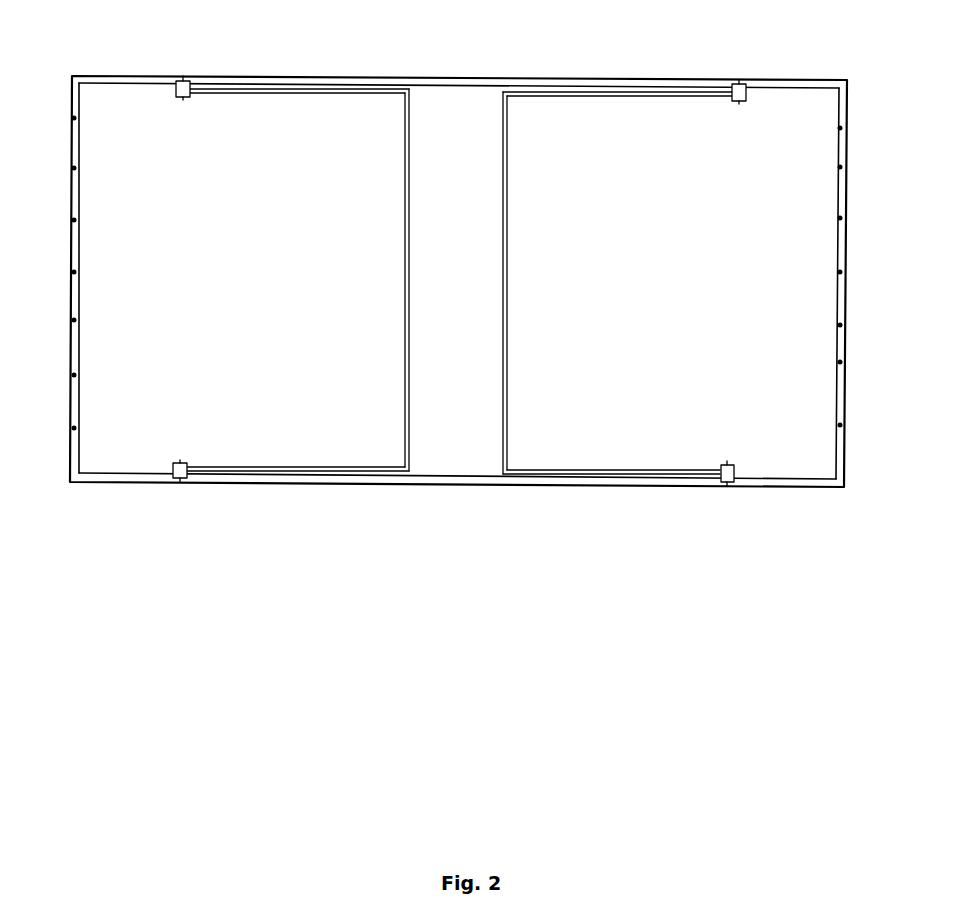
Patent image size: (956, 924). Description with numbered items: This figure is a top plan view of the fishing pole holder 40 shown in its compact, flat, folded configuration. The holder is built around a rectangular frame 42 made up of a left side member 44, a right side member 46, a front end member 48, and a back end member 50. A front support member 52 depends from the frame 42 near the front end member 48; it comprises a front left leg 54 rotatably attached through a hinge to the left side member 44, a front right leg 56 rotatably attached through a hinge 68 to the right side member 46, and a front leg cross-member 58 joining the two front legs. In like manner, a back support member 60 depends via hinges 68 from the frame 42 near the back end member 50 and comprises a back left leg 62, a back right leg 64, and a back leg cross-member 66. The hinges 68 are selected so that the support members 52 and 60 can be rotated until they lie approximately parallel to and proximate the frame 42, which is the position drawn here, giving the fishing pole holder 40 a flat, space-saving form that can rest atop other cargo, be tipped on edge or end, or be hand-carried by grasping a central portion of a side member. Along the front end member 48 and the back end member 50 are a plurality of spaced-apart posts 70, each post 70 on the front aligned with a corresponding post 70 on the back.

The fishing pole holder 40 is at (455, 339).
The rectangular frame 42 is at (68, 486).
The left side member 44 is at (438, 76).
The right side member 46 is at (455, 488).
The front end member 48 is at (836, 256).
The back end member 50 is at (80, 295).
The front support member 52 is at (617, 283).
The front left leg 54 is at (640, 97).
The front right leg 56 is at (635, 470).
The right panel side edge 58 is at (506, 268).
The back support member 60 is at (298, 280).
The back left leg 62 is at (272, 94).
The back right leg 64 is at (262, 467).
The back leg cross-member 66 is at (404, 268).
The hinge 68 is at (182, 100).
The post 70 is at (74, 375).